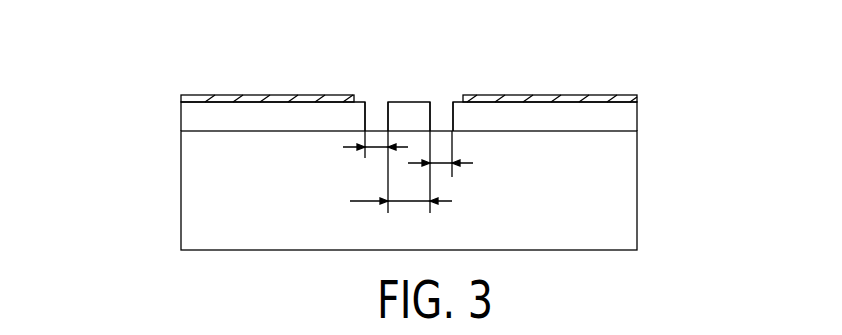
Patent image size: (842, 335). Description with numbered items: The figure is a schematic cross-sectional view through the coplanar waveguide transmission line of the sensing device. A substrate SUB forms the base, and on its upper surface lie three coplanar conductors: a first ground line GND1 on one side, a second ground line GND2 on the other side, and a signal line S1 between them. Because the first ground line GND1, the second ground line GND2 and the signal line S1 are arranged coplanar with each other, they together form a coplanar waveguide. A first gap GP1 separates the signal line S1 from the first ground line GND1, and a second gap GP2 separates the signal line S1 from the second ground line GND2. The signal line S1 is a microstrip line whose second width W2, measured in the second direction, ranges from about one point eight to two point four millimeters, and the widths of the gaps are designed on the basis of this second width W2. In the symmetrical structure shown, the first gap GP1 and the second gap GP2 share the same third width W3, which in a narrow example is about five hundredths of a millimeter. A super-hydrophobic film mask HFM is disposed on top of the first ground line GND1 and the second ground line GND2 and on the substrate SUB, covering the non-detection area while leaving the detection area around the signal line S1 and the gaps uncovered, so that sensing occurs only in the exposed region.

The substrate SUB is at (637, 190).
The first ground line GND1 is at (181, 115).
The second ground line GND2 is at (637, 116).
The super-hydrophobic film mask HFM is at (250, 94).
The signal line S1 is at (410, 102).
The first gap GP1 is at (375, 107).
The second gap GP2 is at (442, 107).
The third width W3 is at (411, 164).
The second width W2 is at (399, 182).